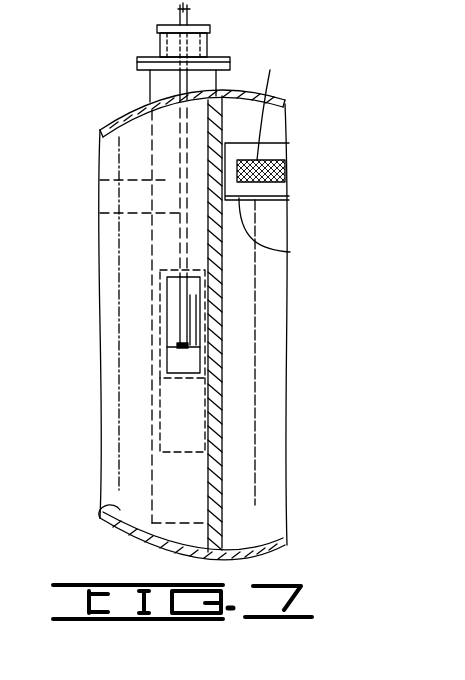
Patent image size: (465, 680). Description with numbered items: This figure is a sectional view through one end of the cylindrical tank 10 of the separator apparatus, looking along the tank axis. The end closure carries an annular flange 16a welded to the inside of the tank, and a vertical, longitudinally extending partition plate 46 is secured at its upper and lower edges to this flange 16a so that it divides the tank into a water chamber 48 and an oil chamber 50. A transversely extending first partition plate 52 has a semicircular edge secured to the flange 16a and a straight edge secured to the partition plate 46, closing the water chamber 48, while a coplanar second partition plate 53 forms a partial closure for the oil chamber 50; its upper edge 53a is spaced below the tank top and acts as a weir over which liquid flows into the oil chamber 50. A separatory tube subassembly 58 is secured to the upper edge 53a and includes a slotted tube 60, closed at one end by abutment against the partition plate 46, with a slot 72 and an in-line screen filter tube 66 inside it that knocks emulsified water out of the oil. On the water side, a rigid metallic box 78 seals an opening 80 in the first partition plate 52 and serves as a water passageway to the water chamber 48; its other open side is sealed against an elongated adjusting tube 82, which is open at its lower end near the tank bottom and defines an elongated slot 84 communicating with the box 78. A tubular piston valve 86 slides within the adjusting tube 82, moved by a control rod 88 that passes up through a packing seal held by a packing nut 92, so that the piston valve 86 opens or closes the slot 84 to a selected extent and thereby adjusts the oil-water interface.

The tank 10 is at (199, 328).
The annular flange 16a is at (100, 508).
The partition plate 46 is at (213, 428).
The water chamber 48 is at (115, 451).
The oil chamber 50 is at (273, 472).
The first partition plate 52 is at (146, 156).
The second partition plate 53 is at (281, 230).
The upper edge 53a is at (290, 252).
The separatory tube subassembly 58 is at (292, 145).
The tube 60 is at (267, 160).
The screen filter tube 66 is at (288, 171).
The slot 72 is at (272, 105).
The rigid metallic box 78 is at (180, 393).
The opening 80 is at (170, 308).
The adjusting tube 82 is at (158, 75).
The slot 84 is at (190, 290).
The tubular piston valve 86 is at (178, 360).
The control rod 88 is at (190, 17).
The packing nut 92 is at (172, 40).